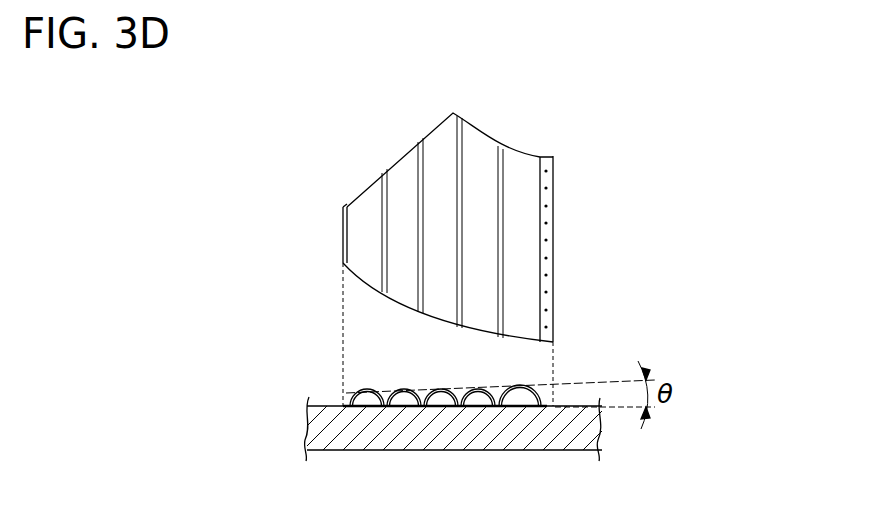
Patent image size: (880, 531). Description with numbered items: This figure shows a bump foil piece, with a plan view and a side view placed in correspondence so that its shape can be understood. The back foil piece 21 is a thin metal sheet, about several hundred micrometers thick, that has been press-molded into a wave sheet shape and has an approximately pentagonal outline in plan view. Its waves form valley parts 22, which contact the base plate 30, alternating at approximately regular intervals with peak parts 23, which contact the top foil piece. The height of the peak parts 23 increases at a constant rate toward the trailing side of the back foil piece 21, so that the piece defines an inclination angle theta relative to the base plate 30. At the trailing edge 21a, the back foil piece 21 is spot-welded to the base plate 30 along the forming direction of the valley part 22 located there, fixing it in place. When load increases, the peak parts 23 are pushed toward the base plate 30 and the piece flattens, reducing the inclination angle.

The back foil piece 21 is at (480, 128).
The edge 21a is at (547, 239).
The valley parts 22 is at (346, 209).
The peak parts 23 is at (402, 177).
The base plate 30 is at (507, 425).